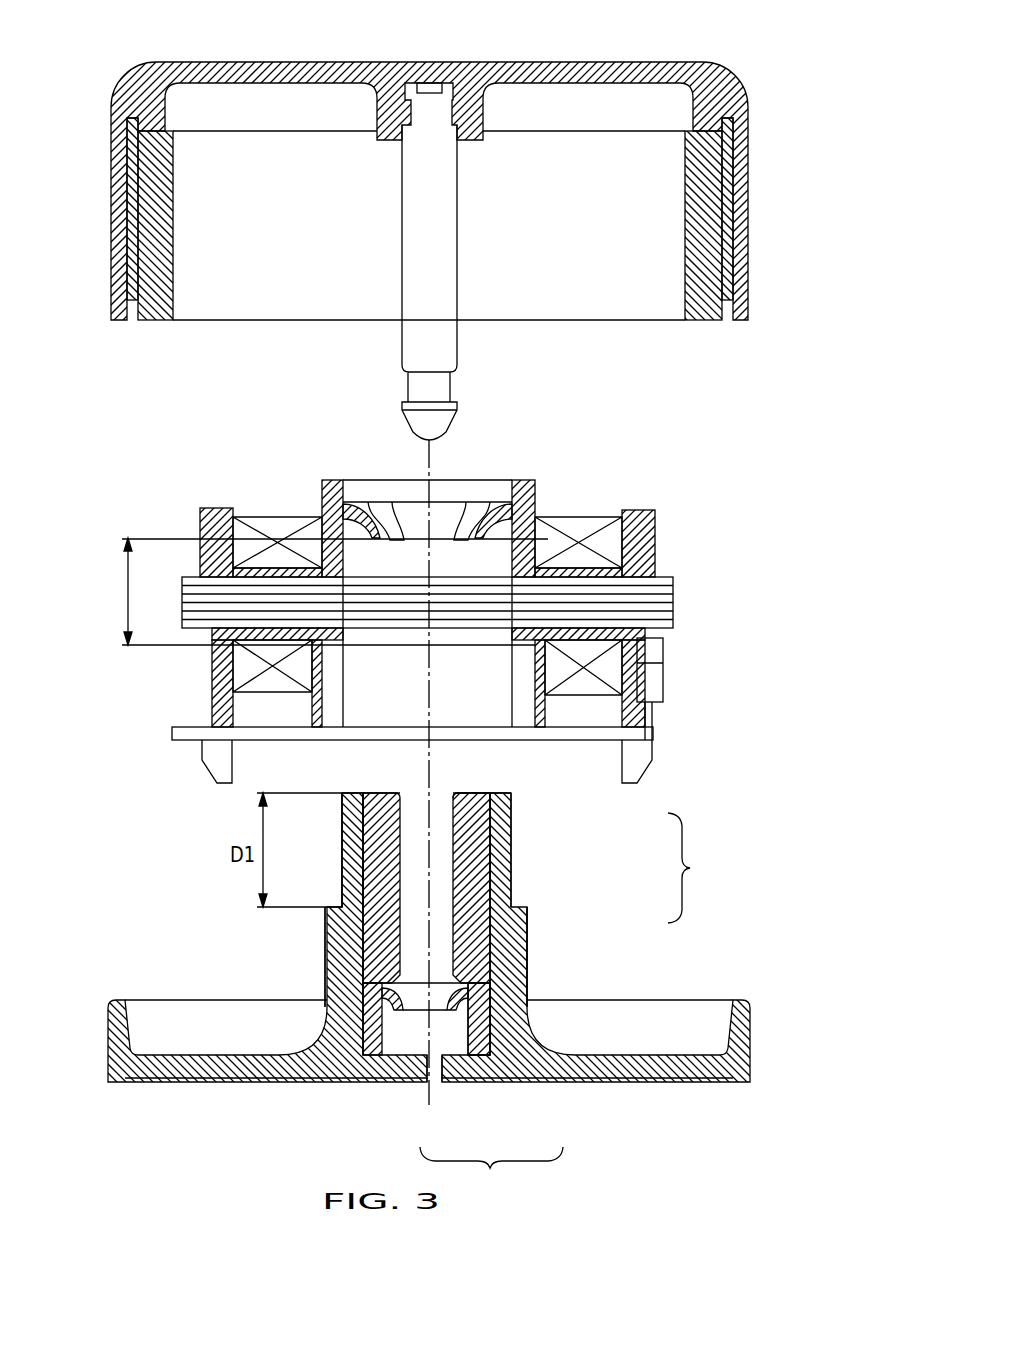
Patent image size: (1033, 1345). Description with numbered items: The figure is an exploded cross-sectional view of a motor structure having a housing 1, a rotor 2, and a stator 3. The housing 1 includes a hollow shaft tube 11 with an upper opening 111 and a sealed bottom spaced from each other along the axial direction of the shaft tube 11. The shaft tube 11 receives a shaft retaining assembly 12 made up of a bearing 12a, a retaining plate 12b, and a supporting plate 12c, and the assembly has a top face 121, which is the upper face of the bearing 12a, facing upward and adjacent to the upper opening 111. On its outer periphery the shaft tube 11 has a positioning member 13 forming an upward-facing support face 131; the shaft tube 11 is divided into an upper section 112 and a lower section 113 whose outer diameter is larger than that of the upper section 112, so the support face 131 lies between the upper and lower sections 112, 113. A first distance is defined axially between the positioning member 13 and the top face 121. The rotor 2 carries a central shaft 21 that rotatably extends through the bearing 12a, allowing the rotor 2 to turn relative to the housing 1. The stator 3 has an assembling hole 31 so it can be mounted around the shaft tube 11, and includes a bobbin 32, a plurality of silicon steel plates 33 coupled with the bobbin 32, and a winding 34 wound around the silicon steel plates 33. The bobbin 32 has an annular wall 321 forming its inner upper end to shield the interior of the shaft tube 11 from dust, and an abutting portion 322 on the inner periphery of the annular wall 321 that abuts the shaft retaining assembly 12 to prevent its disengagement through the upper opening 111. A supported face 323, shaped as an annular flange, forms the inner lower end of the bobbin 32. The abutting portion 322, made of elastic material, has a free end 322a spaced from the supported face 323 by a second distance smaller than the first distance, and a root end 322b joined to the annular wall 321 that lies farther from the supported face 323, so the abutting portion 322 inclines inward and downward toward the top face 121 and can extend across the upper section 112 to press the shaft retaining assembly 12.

The housing 1 is at (701, 959).
The shaft tube 11 is at (532, 858).
The upper opening 111 is at (490, 781).
The upper section 112 is at (498, 837).
The lower section 113 is at (525, 966).
The shaft retaining assembly 12 is at (463, 1088).
The bearing 12a is at (512, 1005).
The retaining plate 12b is at (472, 1012).
The supporting plate 12c is at (442, 1058).
The top face 121 is at (470, 795).
The positioning member 13 is at (333, 915).
The support face 131 is at (335, 906).
The rotor 2 is at (759, 78).
The shaft 21 is at (412, 275).
The stator 3 is at (166, 698).
The assembling hole 31 is at (328, 550).
The bobbin 32 is at (640, 510).
The annular wall 321 is at (527, 480).
The abutting portion 322 is at (356, 515).
The free end 322a is at (397, 513).
The root end 322b is at (362, 505).
The supported face 323 is at (557, 706).
The silicon steel plates 33 is at (668, 590).
The winding 34 is at (578, 522).